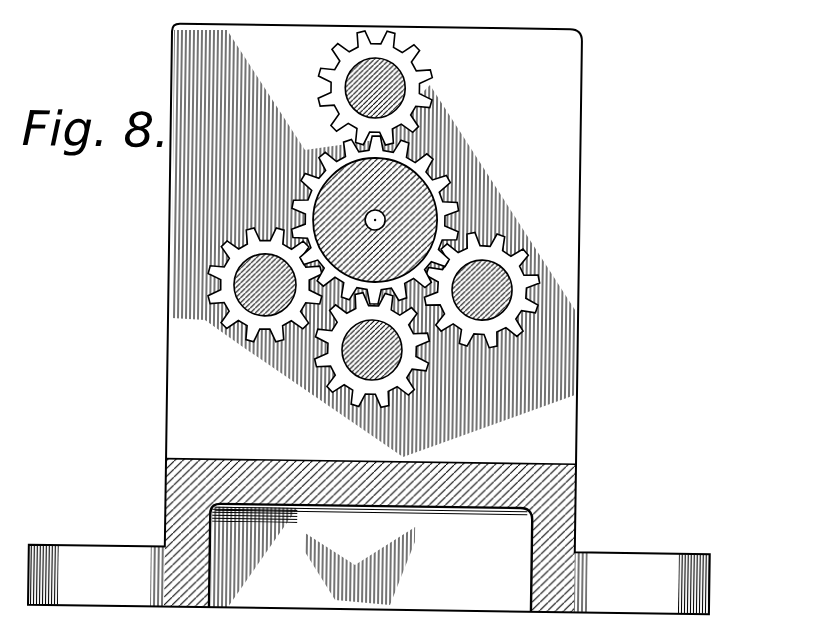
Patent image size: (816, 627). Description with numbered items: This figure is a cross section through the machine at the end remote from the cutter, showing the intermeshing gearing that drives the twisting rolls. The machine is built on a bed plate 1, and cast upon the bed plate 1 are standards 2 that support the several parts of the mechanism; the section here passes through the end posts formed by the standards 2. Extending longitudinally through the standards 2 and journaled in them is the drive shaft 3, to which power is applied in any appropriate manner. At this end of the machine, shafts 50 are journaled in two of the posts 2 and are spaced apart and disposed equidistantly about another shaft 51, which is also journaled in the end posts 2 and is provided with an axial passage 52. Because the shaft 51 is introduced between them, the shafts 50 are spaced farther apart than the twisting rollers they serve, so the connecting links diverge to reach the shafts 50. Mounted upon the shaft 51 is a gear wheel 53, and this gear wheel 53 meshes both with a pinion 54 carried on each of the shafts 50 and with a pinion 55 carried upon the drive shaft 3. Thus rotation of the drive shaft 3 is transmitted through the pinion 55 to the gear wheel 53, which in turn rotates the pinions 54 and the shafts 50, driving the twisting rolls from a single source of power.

The bed plate 1 is at (370, 558).
The standards 2 is at (578, 352).
The drive shaft 3 is at (376, 377).
The shafts 50 is at (377, 218).
The shaft 51 is at (430, 171).
The axial passage 52 is at (378, 217).
The gear wheel 53 is at (406, 146).
The pinion 54 is at (252, 339).
The pinion 55 is at (391, 387).